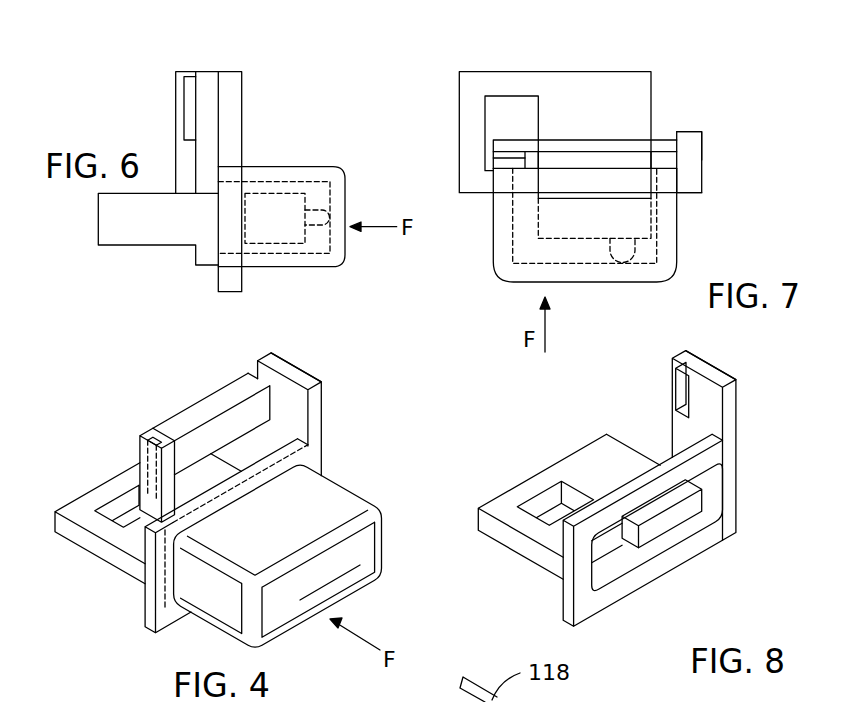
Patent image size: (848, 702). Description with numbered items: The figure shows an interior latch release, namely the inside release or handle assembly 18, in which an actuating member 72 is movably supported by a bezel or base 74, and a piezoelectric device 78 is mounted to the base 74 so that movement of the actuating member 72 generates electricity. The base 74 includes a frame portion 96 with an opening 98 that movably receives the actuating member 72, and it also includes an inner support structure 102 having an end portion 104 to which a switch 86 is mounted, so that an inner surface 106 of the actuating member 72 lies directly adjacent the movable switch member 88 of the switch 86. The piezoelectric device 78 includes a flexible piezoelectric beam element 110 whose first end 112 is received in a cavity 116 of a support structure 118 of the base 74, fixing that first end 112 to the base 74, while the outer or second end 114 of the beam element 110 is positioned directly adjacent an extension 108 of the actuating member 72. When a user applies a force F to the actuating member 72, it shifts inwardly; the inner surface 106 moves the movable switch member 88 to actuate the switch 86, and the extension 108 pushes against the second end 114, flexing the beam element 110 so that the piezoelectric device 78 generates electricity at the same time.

In FIG. 4, the inside release or handle assembly 18 is at (350, 463).
In FIG. 6, the actuating member 72 is at (345, 243).
In FIG. 7, the actuating member 72 is at (570, 282).
In FIG. 4, the actuating member 72 is at (383, 533).
In FIG. 6, the bezel or base 74 is at (238, 113).
In FIG. 7, the bezel or base 74 is at (702, 155).
In FIG. 4, the bezel or base 74 is at (315, 412).
In FIG. 8, the bezel or base 74 is at (737, 458).
In FIG. 6, the piezoelectric device 78 is at (187, 112).
In FIG. 7, the piezoelectric device 78 is at (597, 139).
In FIG. 4, the piezoelectric device 78 is at (188, 407).
In FIG. 6, the switch 86 is at (290, 193).
In FIG. 7, the switch 86 is at (647, 223).
In FIG. 6, the movable switch member 88 is at (327, 213).
In FIG. 7, the movable switch member 88 is at (620, 263).
In FIG. 4, the frame portion 96 is at (148, 603).
In FIG. 8, the frame portion 96 is at (583, 593).
In FIG. 8, the opening 98 is at (608, 560).
In FIG. 7, the inner support structure 102 is at (530, 72).
In FIG. 4, the inner support structure 102 is at (107, 480).
In FIG. 8, the inner support structure 102 is at (532, 475).
In FIG. 8, the end portion 104 is at (673, 518).
In FIG. 4, the inner surface 106 is at (337, 577).
In FIG. 7, the extension 108 is at (502, 162).
In FIG. 4, the extension 108 is at (120, 508).
In FIG. 4, the flexible piezoelectric beam element 110 is at (213, 397).
In FIG. 7, the first end 112 is at (663, 139).
In FIG. 4, the first end 112 is at (250, 372).
In FIG. 4, the second end 114 is at (148, 435).
In FIG. 8, the cavity 116 is at (682, 390).
In FIG. 6, the support structure 118 is at (108, 227).
In FIG. 7, the support structure 118 is at (693, 173).
In FIG. 4, the support structure 118 is at (293, 373).
In FIG. 8, the support structure 118 is at (718, 365).